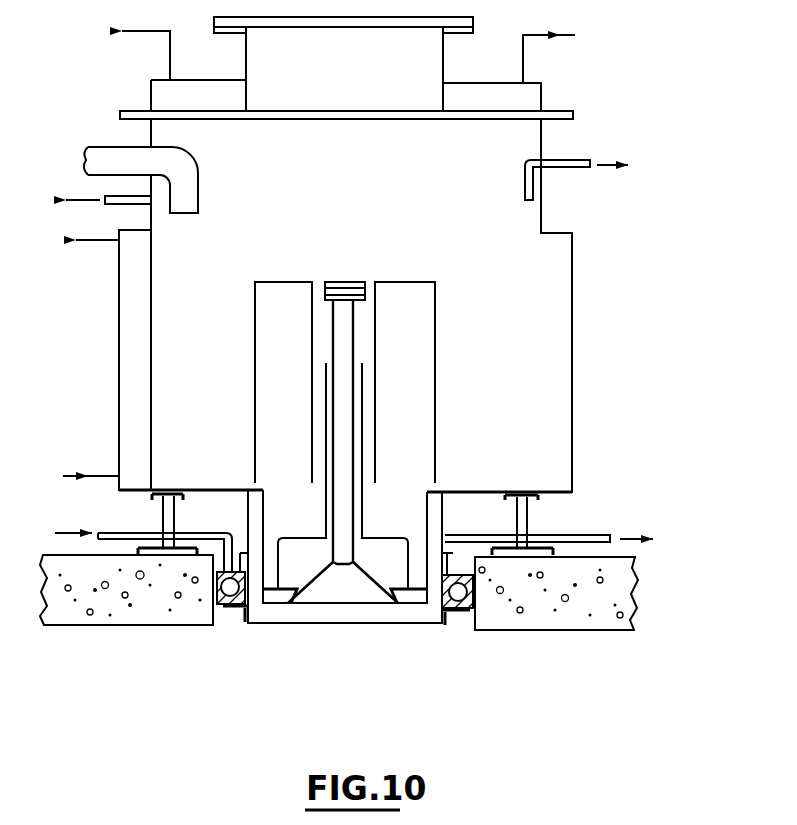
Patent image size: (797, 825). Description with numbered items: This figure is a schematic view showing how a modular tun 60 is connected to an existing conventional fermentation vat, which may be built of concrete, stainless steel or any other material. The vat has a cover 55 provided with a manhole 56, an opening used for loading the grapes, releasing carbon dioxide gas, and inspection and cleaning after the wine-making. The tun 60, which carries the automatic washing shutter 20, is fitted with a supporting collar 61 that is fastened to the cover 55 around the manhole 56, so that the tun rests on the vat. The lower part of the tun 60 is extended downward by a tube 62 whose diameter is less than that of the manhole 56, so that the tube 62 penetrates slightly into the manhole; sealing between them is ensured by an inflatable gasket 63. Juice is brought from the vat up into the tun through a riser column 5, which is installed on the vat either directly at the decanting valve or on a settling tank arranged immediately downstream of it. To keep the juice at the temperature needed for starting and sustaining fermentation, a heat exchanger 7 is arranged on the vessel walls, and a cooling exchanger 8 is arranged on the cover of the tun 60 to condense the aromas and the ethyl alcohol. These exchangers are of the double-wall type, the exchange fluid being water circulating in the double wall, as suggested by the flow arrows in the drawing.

The riser column 5 is at (98, 152).
The heat exchanger 7 is at (125, 321).
The cooling exchanger 8 is at (481, 95).
The automatic washing shutter 20 is at (440, 334).
The cover 55 is at (113, 615).
The manhole 56 is at (225, 612).
The tun 60 is at (543, 143).
The supporting collar 61 is at (172, 516).
The tube 62 is at (250, 607).
The inflatable gasket 63 is at (460, 612).